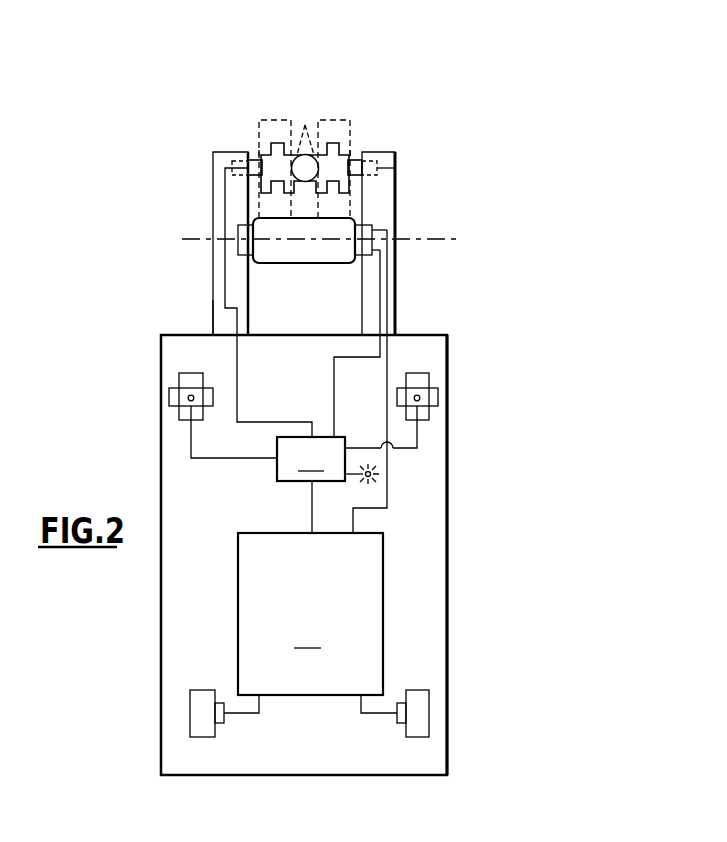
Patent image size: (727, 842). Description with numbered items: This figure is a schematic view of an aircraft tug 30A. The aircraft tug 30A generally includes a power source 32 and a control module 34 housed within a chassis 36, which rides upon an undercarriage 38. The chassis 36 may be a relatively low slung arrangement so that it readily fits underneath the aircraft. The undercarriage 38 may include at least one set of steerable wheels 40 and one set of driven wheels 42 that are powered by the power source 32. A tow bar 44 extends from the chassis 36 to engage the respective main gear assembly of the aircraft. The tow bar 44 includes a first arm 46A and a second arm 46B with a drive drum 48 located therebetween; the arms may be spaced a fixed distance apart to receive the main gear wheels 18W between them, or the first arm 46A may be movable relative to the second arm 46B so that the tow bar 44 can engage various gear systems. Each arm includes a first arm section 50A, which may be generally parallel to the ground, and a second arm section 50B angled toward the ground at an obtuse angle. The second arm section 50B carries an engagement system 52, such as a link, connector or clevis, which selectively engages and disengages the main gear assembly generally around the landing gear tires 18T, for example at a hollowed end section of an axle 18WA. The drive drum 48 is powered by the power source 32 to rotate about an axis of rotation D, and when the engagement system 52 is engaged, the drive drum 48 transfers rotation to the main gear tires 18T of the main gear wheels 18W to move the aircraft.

The aircraft tug 30A is at (550, 476).
The undercarriage 38 is at (470, 386).
The chassis 36 is at (458, 588).
The power source 32 is at (312, 571).
The control module 34 is at (328, 460).
The steerable wheels 40 is at (427, 373).
The driven wheels 42 is at (423, 705).
The first arm 46A is at (204, 166).
The second arm 46B is at (406, 156).
The tow bar 44 is at (406, 196).
The drive drum 48 is at (283, 253).
The engagement system 52 is at (250, 165).
The first arm section 50A is at (215, 315).
The second arm section 50B is at (213, 200).
The main gear wheels 18W is at (362, 120).
The axle 18WA is at (256, 148).
The landing gear tires 18T is at (332, 118).
The axis of rotation D is at (458, 238).